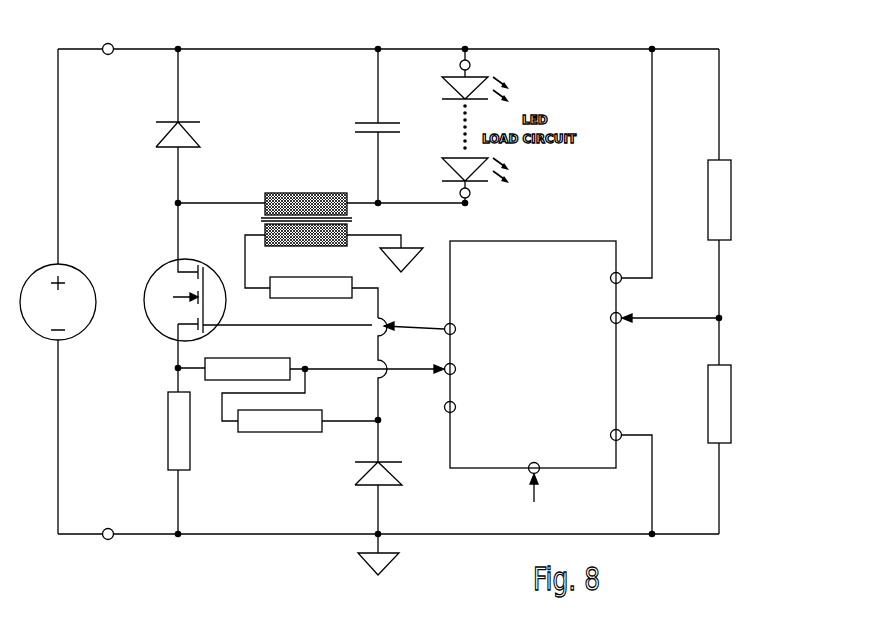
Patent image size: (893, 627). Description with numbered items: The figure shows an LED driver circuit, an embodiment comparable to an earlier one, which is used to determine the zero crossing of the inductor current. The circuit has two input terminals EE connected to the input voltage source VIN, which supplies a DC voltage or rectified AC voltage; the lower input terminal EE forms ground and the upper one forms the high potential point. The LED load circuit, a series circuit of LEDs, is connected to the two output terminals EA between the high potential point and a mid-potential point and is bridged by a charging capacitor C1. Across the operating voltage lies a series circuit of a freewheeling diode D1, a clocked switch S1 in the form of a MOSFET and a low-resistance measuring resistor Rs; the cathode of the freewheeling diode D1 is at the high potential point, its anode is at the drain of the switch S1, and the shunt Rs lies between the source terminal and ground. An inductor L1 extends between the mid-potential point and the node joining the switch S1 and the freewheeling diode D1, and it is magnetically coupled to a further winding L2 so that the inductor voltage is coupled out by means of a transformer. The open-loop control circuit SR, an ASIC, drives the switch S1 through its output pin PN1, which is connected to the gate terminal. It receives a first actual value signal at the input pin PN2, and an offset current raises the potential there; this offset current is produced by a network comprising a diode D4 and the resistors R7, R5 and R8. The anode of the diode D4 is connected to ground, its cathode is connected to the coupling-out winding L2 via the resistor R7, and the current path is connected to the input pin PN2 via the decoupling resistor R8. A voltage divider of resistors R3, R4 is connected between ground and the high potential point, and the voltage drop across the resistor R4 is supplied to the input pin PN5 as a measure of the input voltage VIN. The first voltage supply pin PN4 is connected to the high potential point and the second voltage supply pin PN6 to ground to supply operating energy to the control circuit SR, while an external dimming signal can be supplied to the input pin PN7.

The input terminals EE is at (109, 292).
The input voltage source VIN is at (58, 294).
The freewheeling diode D1 is at (165, 134).
The clocked switch S1 is at (256, 307).
The measuring resistor Rs is at (166, 431).
The decoupling resistor R5 is at (241, 358).
The decoupling resistor R8 is at (300, 412).
The inductor L1 is at (321, 195).
The further winding L2 is at (334, 256).
The decoupling resistor R7 is at (324, 300).
The charging capacitor C1 is at (367, 126).
The diode D4 is at (366, 474).
The output terminals EA is at (477, 128).
The open-loop control circuit SR is at (533, 342).
The output pin PN1 is at (420, 320).
The input pin PN2 is at (380, 358).
The first voltage supply pin PN4 is at (634, 178).
The input pin PN5 is at (665, 333).
The second voltage supply pin PN6 is at (633, 473).
The input pin PN7 is at (540, 494).
The voltage divider resistor R3 is at (707, 200).
The voltage divider resistor R4 is at (708, 404).